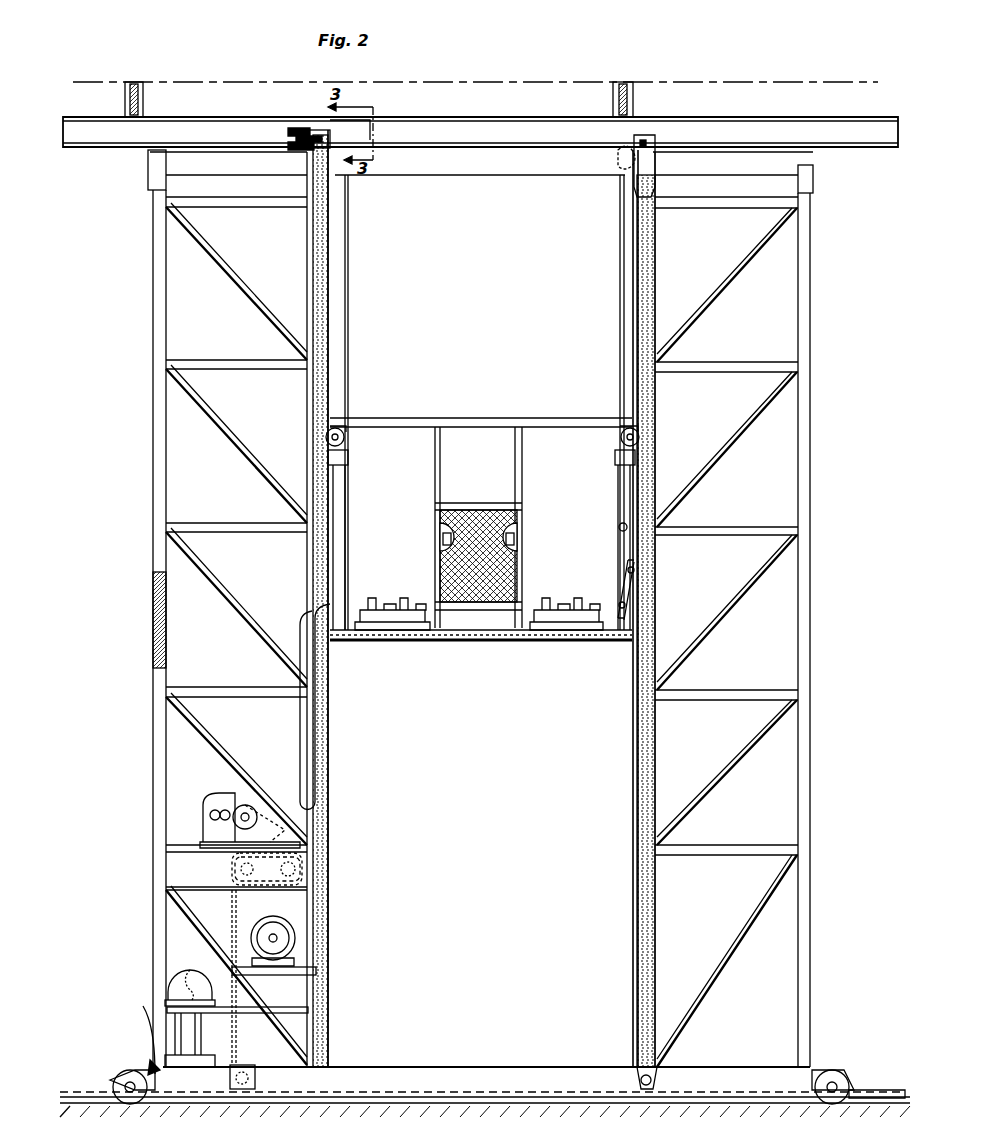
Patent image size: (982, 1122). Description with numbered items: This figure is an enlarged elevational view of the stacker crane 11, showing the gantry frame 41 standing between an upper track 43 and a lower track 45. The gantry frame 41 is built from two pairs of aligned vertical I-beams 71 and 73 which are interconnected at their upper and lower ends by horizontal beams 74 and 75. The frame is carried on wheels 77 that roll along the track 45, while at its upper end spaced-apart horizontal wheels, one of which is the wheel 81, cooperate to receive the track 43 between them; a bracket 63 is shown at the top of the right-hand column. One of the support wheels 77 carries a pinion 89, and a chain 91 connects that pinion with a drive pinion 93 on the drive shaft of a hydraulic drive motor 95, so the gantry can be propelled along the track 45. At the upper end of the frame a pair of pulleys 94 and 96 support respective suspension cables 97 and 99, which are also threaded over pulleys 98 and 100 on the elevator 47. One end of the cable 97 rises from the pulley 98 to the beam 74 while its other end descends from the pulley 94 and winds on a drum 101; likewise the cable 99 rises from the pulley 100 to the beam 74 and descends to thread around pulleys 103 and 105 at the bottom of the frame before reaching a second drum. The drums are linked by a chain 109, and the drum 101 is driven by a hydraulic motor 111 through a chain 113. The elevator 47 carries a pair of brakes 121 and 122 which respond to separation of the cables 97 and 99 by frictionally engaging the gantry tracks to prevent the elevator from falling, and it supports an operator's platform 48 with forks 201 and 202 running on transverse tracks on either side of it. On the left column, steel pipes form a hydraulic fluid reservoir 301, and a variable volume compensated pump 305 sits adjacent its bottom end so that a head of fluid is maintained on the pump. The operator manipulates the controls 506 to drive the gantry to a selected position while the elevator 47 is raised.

The stacker crane 11 is at (125, 1058).
The gantry frame 41 is at (338, 763).
The track 43 is at (859, 141).
The track 45 is at (898, 1090).
The elevator 47 is at (440, 646).
The operator's platform 48 is at (474, 622).
The upper bracket 63 is at (655, 142).
The vertical I-beams 71 is at (153, 343).
The vertical I-beams 73 is at (330, 268).
The horizontal beam 74 is at (492, 186).
The horizontal beam 75 is at (400, 1068).
The wheels 77 is at (118, 1076).
The horizontal wheel 81 is at (300, 148).
The pinion 89 is at (139, 1036).
The chain 91 is at (203, 1030).
The drive pinion 93 is at (180, 976).
The pulley 94 is at (368, 140).
The hydraulic drive motor 95 is at (204, 980).
The pulley 96 is at (614, 158).
The suspension cable 97 is at (350, 230).
The pulley 98 is at (336, 420).
The suspension cable 99 is at (620, 296).
The pulley 100 is at (632, 424).
The drum 101 is at (302, 868).
The pulley 103 is at (668, 1068).
The pulley 105 is at (272, 1060).
The chain 109 is at (269, 878).
The hydraulic motor 111 is at (244, 794).
The chain 113 is at (279, 808).
The brake 121 is at (354, 444).
The brake 122 is at (612, 446).
The fork 201 is at (384, 598).
The fork 202 is at (560, 596).
The hydraulic fluid reservoir 301 is at (153, 628).
The variable volume compensated pump 305 is at (298, 940).
The controls 506 is at (441, 540).